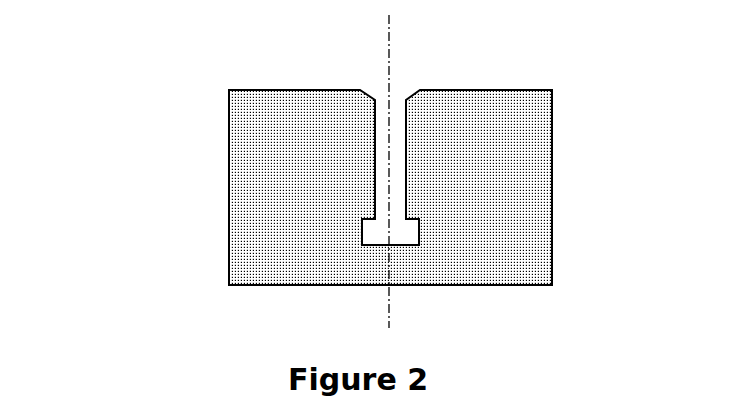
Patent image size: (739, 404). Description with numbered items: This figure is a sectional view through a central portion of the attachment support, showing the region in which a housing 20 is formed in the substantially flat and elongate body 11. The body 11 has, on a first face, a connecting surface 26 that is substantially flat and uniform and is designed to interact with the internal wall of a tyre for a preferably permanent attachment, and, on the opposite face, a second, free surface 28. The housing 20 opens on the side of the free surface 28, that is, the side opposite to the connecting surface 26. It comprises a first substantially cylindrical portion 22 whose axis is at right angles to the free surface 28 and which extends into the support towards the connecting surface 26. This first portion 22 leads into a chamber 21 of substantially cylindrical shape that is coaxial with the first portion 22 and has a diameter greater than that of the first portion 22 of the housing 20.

The body 11 is at (310, 110).
The housing 20 is at (391, 152).
The chamber 21 is at (388, 233).
The first substantially cylindrical portion 22 is at (385, 178).
The connecting surface 26 is at (373, 292).
The free surface 28 is at (490, 90).